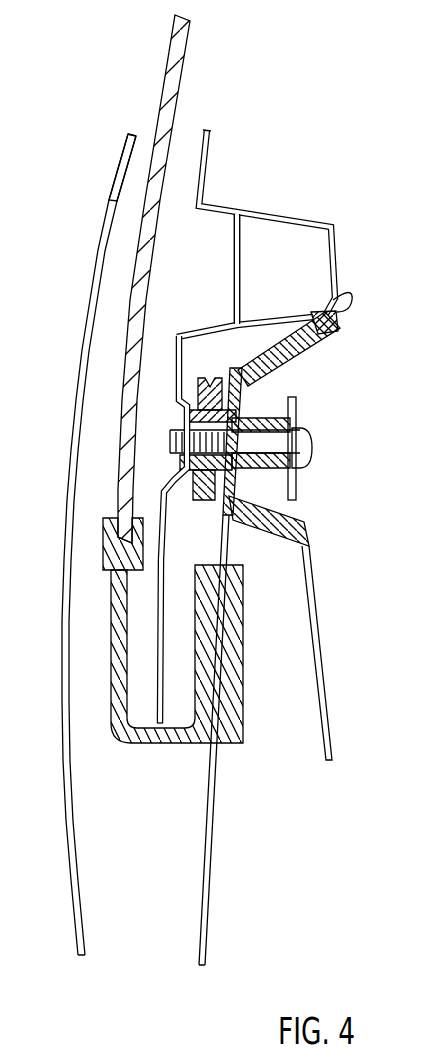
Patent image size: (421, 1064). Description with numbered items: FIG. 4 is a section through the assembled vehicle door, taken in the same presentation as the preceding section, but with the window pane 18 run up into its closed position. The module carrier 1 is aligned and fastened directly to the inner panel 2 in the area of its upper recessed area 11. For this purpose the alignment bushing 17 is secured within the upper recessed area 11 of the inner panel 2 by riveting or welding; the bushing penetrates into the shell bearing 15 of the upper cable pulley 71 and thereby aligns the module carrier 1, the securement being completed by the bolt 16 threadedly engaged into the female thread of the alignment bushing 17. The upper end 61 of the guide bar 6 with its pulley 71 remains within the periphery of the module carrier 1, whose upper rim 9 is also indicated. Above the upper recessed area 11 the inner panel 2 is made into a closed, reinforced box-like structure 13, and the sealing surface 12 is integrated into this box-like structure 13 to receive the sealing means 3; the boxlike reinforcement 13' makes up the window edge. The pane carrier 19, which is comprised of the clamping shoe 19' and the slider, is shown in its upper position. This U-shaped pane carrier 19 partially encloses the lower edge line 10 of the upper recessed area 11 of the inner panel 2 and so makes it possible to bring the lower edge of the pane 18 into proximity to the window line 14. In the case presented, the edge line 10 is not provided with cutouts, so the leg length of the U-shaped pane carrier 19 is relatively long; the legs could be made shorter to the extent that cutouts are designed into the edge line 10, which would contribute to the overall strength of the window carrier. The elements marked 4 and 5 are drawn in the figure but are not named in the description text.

The module carrier 1 is at (307, 358).
The inner panel 2 is at (283, 210).
The sealing means 3 is at (312, 318).
The outer panel 4 is at (72, 418).
The bracket flange 5 is at (313, 652).
The guide bar 6 is at (213, 787).
The upper rim of the module carrier 9 is at (348, 313).
The lower edge line 10 is at (150, 733).
The upper recessed area 11 is at (181, 357).
The sealing surface 12 is at (345, 282).
The box-like structure 13 is at (251, 244).
The boxlike reinforcement 13' is at (296, 205).
The window line 14 is at (123, 134).
The shell bearing 15 is at (190, 488).
The bolt 16 is at (285, 447).
The alignment bushing 17 is at (178, 420).
The pane 18 is at (187, 32).
The pane carrier 19 is at (177, 761).
The clamping shoe 19' is at (106, 567).
The upper end of the guide bar 61 is at (252, 357).
The upper cable pulley 71 is at (212, 496).